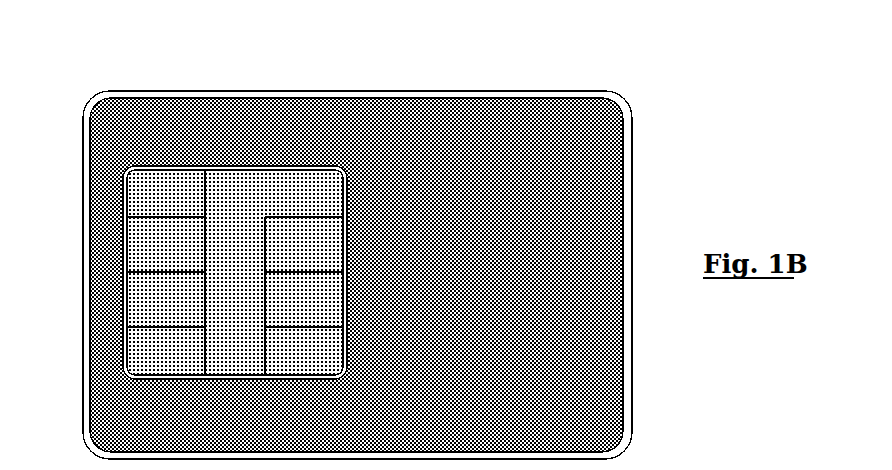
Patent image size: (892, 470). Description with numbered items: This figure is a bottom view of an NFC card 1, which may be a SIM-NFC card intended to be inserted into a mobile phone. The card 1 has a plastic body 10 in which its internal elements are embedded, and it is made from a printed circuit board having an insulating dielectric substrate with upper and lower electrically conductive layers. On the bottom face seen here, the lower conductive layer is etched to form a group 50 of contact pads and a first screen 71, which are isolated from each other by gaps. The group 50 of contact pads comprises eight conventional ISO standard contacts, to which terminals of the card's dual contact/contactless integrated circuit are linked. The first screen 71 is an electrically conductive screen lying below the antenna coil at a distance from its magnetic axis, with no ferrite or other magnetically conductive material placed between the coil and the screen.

The NFC card 1 is at (327, 255).
The plastic body 10 is at (357, 255).
The first screen 71 is at (227, 106).
The group of contact pads 50 is at (125, 300).